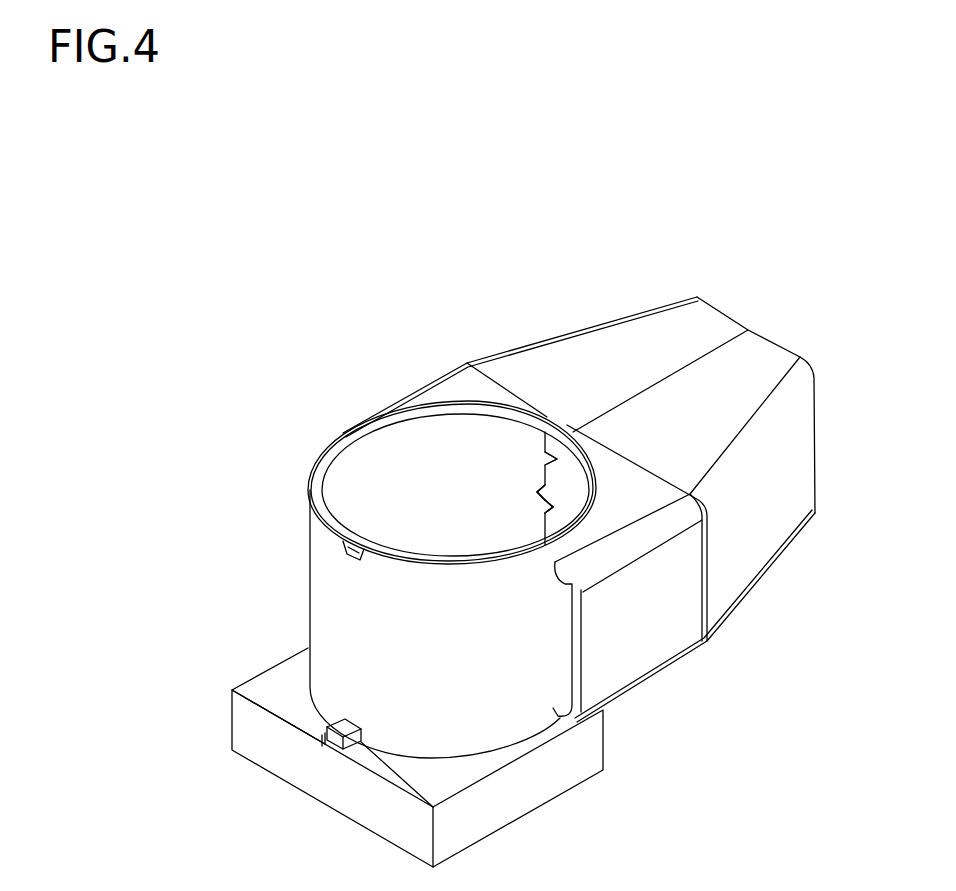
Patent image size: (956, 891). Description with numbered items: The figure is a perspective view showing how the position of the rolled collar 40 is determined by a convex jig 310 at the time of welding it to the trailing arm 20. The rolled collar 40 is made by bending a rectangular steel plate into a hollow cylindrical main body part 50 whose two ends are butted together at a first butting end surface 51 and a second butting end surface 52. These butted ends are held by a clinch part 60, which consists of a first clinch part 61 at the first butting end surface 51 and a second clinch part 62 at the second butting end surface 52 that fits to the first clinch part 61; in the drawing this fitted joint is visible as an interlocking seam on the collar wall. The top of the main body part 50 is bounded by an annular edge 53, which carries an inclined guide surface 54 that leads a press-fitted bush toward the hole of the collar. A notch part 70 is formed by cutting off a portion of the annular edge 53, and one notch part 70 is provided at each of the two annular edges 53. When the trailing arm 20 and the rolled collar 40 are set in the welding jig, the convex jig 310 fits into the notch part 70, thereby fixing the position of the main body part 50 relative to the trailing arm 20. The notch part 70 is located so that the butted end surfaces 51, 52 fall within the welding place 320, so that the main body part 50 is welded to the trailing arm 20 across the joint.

The trailing arm 20 is at (594, 357).
The welding place 320 is at (597, 524).
The rolled collar 40 is at (307, 593).
The main body part 50 is at (513, 727).
The first butting end surface 51 is at (528, 542).
The second butting end surface 52 is at (556, 458).
The annular edge 53 is at (317, 463).
The guide surface 54 is at (352, 444).
The clinch part 60 is at (477, 462).
The first clinch part 61 is at (538, 490).
The second clinch part 62 is at (542, 514).
The notch part 70 is at (357, 543).
The convex jig 310 is at (330, 748).